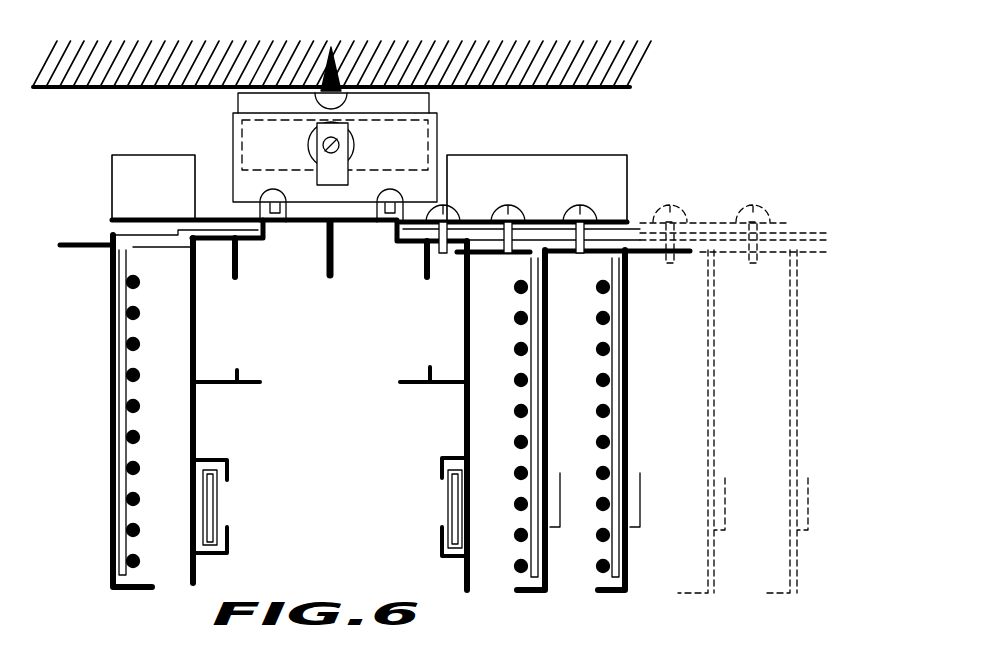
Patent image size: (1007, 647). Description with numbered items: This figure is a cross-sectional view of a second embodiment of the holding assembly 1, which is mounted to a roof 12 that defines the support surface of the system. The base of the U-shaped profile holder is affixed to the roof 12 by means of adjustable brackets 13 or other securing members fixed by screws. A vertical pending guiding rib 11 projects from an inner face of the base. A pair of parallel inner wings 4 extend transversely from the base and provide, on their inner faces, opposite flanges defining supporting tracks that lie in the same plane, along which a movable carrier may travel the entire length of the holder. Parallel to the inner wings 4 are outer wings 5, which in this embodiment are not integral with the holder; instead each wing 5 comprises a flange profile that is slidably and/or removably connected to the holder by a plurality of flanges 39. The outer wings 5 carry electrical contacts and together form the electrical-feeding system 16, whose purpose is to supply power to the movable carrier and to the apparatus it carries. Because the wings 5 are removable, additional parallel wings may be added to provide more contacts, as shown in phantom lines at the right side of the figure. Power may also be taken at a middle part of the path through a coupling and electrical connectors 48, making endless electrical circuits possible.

The holding assembly 1 is at (100, 288).
The inner wings 4 is at (192, 344).
The outer wings 5 is at (102, 320).
The guiding rib 11 is at (333, 214).
The roof 12 is at (78, 72).
The adjustable brackets 13 is at (308, 143).
The electrical-feeding system 16 is at (110, 448).
The flanges 39 is at (549, 208).
The electrical connectors 48 is at (125, 180).